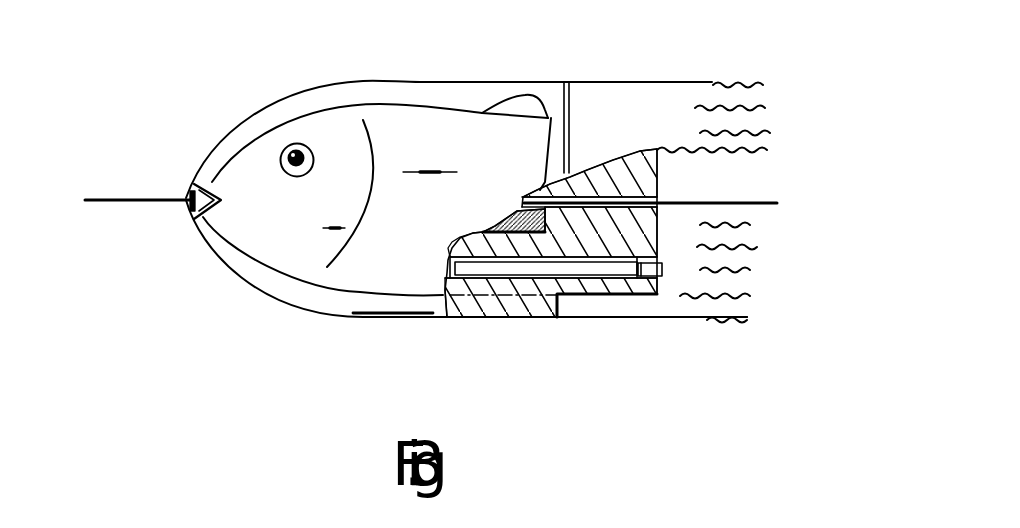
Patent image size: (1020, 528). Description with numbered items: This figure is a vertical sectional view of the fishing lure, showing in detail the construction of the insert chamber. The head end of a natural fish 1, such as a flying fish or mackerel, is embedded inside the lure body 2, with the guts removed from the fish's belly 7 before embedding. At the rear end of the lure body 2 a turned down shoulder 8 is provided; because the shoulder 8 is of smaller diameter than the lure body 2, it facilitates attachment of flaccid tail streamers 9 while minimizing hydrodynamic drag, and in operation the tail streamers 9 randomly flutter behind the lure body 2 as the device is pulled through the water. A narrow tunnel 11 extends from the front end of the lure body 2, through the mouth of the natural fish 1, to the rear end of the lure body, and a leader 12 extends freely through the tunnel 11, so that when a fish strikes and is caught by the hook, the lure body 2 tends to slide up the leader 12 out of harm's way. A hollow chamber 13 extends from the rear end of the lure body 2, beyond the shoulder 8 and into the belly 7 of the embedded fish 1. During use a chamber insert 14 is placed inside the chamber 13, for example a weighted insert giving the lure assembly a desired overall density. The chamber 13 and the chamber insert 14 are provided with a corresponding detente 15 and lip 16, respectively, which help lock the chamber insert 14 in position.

The natural fish 1 is at (402, 122).
The lure body 2 is at (337, 93).
The belly 7 is at (458, 288).
The turned down shoulder 8 is at (587, 300).
The tail streamers 9 is at (715, 92).
The tunnel 11 is at (699, 187).
The leader 12 is at (117, 197).
The hollow chamber 13 is at (480, 287).
The chamber insert 14 is at (605, 270).
The detente 15 is at (642, 256).
The lip 16 is at (662, 268).